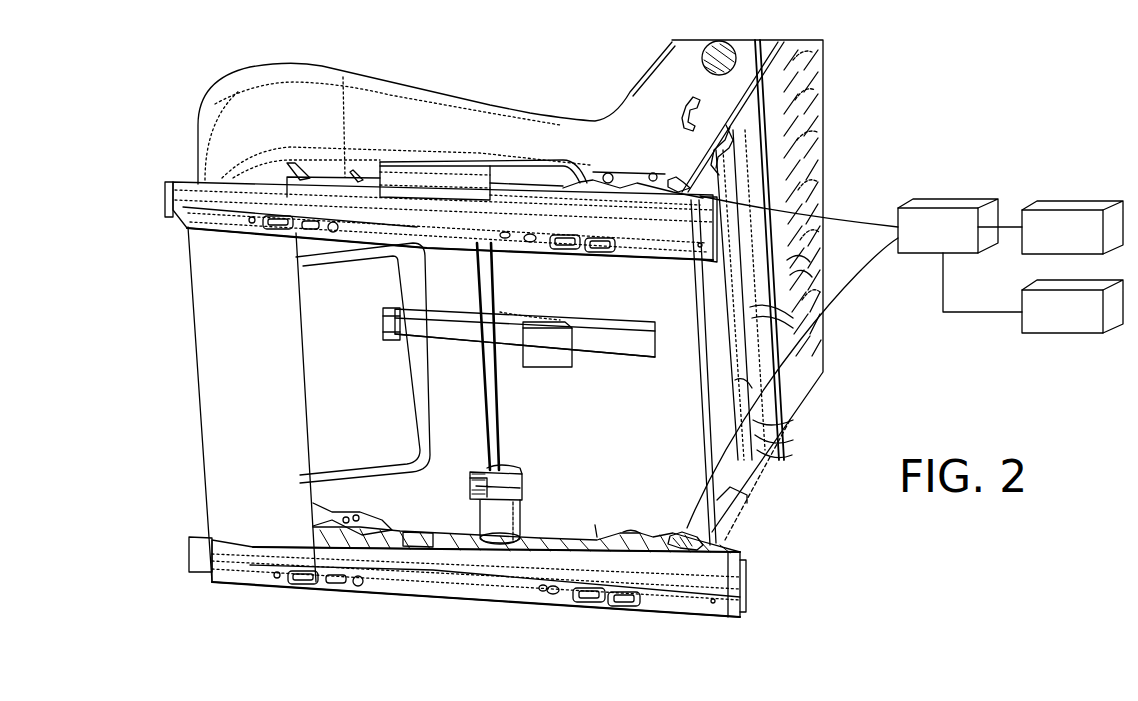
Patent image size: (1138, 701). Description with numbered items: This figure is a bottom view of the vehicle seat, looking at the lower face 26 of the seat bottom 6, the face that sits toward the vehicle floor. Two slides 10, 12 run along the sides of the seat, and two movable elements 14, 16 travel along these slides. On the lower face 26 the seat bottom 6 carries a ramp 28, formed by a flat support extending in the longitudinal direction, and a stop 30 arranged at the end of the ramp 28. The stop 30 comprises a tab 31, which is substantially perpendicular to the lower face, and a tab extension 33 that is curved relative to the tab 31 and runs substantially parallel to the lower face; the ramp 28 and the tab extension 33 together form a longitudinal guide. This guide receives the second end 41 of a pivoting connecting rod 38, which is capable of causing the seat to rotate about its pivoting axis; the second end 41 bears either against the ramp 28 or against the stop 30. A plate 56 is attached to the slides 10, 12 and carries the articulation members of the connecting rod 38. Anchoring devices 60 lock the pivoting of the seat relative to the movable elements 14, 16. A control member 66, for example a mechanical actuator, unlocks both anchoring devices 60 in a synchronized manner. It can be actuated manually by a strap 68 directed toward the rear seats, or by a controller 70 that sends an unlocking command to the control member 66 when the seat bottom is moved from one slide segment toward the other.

The seat bottom 6 is at (245, 82).
The slide 10 is at (170, 185).
The slide 12 is at (188, 545).
The movable element 14 is at (500, 193).
The movable element 16 is at (548, 553).
The lower face 26 is at (440, 505).
The ramp 28 is at (515, 327).
The stop 30 is at (577, 347).
The tab 31 is at (525, 345).
The tab extension 33 is at (550, 353).
The pivoting connecting rod 38 is at (417, 405).
The second end 41 is at (420, 328).
The plate 56 is at (222, 488).
The anchoring device 60 is at (667, 180).
The control member 66 is at (854, 362).
The strap 68 is at (1072, 306).
The controller 70 is at (1072, 227).